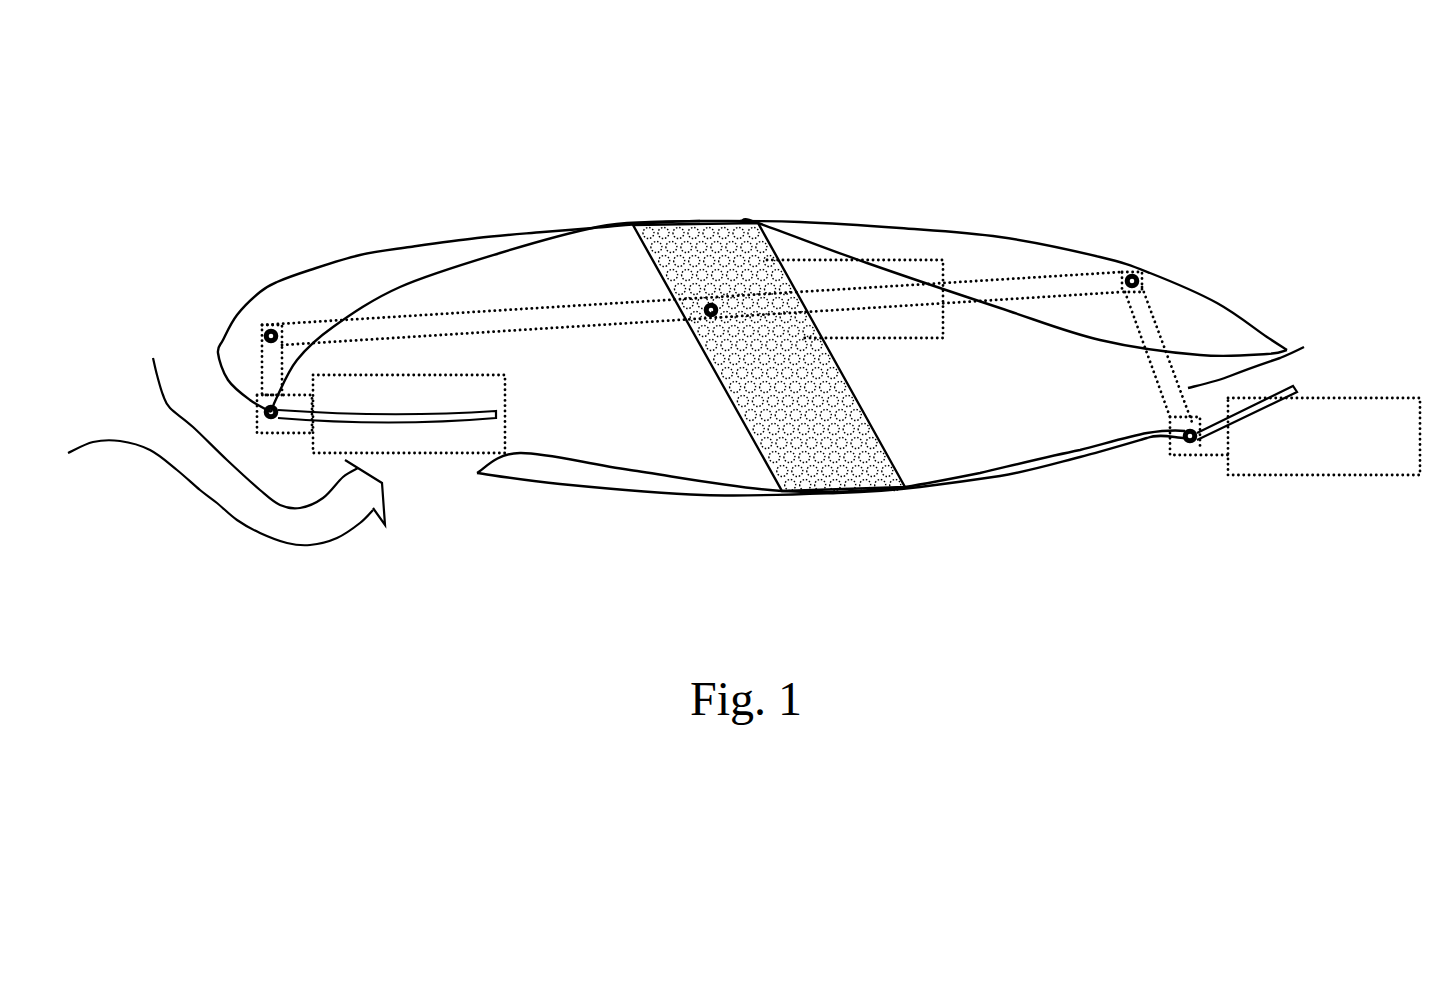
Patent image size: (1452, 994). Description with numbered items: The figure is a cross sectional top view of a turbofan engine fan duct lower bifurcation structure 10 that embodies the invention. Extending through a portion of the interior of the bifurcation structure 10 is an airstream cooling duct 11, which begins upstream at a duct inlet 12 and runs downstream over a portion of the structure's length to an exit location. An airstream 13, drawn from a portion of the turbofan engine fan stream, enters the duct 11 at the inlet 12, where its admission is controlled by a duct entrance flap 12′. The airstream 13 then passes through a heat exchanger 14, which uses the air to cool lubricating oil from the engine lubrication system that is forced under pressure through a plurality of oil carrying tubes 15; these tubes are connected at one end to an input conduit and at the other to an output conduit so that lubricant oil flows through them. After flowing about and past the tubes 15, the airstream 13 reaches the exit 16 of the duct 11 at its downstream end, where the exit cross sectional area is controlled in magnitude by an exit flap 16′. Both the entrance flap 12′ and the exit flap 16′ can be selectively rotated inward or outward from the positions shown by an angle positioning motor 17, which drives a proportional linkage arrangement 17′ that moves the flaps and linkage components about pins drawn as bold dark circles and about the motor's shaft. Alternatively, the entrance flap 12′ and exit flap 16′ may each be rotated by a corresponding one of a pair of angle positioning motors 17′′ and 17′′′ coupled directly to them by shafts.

The fan duct lower bifurcation structure 10 is at (410, 185).
The airstream cooling duct 11 is at (643, 419).
The duct inlet 12 is at (460, 462).
The duct entrance flap 12′ is at (477, 412).
The airstream 13 is at (217, 518).
The heat exchanger 14 is at (640, 234).
The oil carrying tubes 15 is at (748, 427).
The exit 16 is at (1304, 347).
The exit flap 16′ is at (1290, 388).
The angle positioning motor 17 is at (925, 337).
The proportional linkage arrangement 17′ is at (263, 357).
The angle positioning motor 17′′ is at (462, 375).
The angle positioning motor 17′′′ is at (1340, 398).